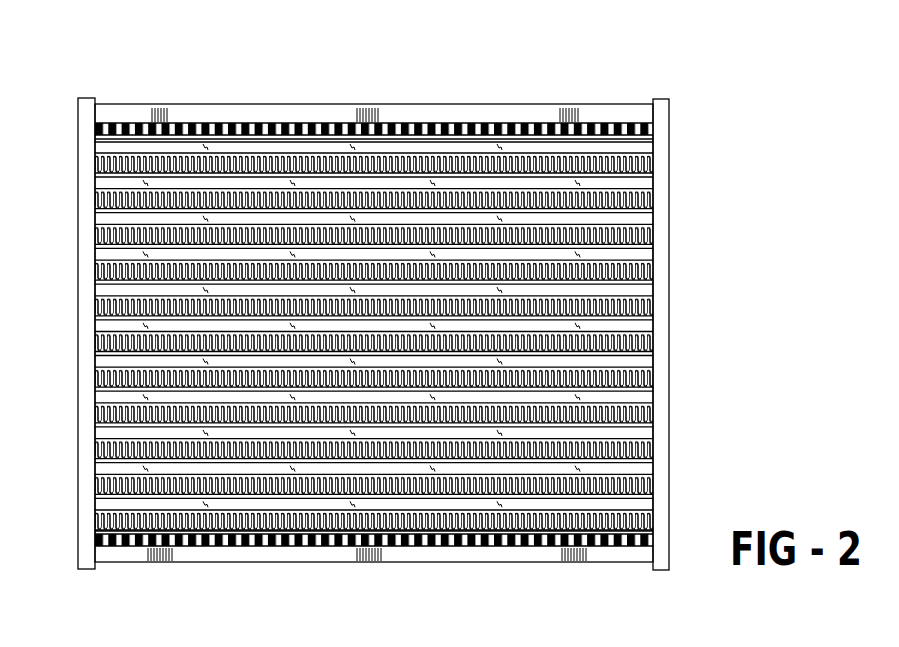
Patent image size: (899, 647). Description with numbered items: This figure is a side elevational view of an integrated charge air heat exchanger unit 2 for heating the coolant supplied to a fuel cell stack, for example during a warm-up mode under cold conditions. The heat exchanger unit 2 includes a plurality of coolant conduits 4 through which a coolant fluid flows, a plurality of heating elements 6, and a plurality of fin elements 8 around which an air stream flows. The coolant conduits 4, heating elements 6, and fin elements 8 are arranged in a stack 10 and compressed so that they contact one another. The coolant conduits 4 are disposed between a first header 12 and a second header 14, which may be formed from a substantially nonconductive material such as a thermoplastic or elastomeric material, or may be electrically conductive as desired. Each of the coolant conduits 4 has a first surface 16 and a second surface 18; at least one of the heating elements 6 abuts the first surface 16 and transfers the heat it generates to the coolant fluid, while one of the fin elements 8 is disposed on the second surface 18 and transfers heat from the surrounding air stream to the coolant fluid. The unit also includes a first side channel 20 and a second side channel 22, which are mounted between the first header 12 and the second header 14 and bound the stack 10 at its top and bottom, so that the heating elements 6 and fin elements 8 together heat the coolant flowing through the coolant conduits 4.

The integrated charge air heat exchanger unit 2 is at (697, 85).
The coolant conduits 4 is at (115, 430).
The heating elements 6 is at (653, 210).
The fin elements 8 is at (645, 447).
The stack 10 is at (48, 568).
The first header 12 is at (665, 148).
The second header 14 is at (76, 563).
The first surface 16 is at (637, 312).
The second surface 18 is at (635, 335).
The first side channel 20 is at (309, 103).
The second side channel 22 is at (432, 565).